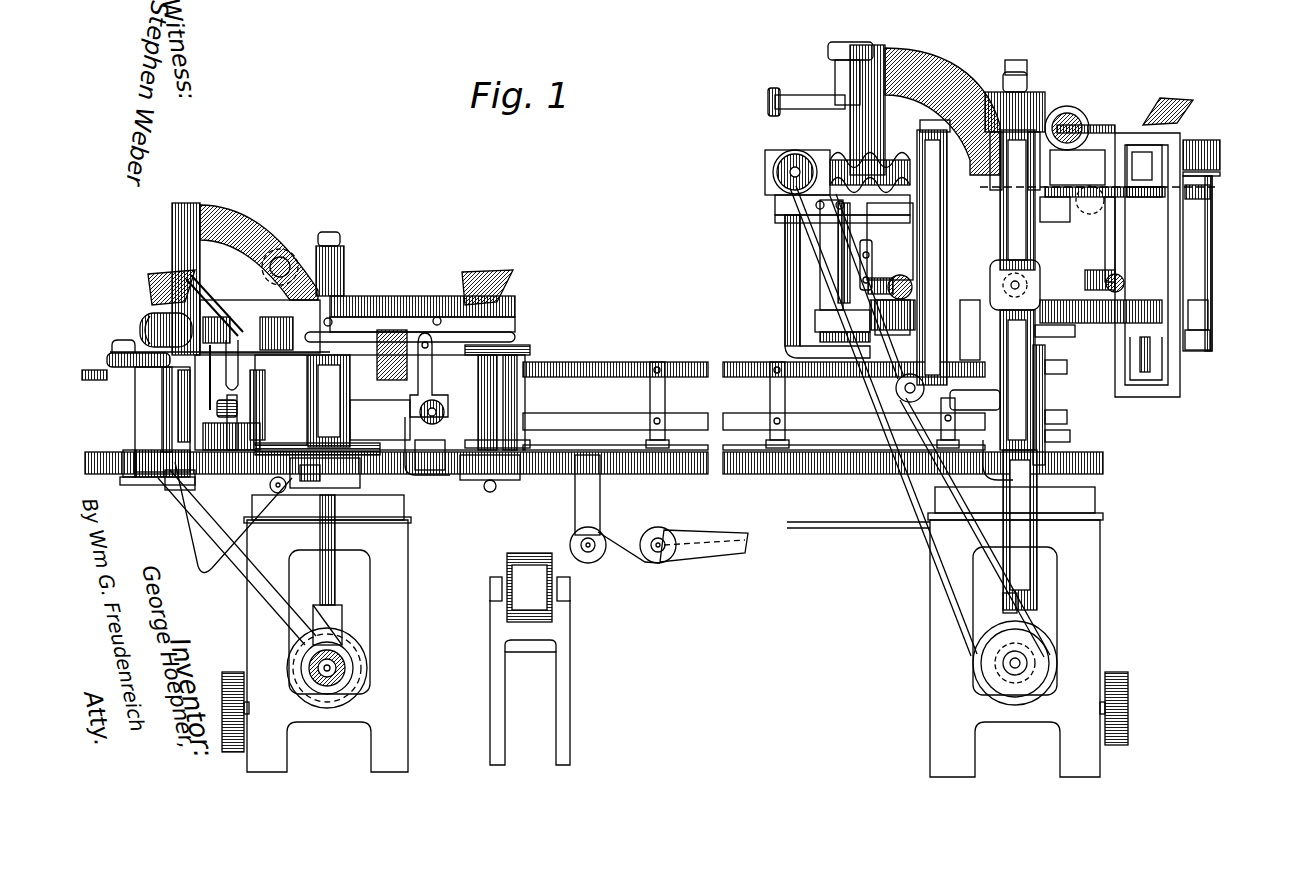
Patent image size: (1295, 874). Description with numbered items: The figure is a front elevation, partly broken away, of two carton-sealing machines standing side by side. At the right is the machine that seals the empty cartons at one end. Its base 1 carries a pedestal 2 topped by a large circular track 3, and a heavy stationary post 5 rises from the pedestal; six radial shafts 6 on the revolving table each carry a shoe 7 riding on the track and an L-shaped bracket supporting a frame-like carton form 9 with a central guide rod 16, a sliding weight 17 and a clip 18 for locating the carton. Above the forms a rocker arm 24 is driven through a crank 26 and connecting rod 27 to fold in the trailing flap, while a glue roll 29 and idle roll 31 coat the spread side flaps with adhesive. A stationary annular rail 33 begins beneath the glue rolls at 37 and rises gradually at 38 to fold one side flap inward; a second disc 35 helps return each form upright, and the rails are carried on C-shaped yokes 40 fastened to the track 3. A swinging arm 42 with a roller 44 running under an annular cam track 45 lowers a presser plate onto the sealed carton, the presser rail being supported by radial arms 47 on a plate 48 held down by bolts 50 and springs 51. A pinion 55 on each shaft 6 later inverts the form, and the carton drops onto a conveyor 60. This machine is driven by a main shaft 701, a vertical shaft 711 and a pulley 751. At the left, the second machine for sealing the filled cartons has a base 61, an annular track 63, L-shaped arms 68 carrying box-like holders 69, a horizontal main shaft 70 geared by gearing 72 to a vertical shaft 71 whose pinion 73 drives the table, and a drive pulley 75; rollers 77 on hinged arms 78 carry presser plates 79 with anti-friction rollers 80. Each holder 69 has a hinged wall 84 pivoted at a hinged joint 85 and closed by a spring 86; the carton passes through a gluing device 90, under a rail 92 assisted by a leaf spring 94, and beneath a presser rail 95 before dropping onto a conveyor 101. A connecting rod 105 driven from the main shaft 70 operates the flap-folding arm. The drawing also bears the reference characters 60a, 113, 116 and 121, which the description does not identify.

The base 1 is at (1085, 552).
The pedestal 2 is at (1067, 392).
The circular track 3 is at (1057, 338).
The cylindrical post 5 is at (1030, 88).
The radial shafts 6 is at (1000, 262).
The shoe 7 is at (1005, 275).
The frame-like part 9 is at (1208, 312).
The guide rod 16 is at (1076, 291).
The weight 17 is at (825, 328).
The clip 18 is at (899, 351).
The rocker arm 24 is at (822, 97).
The crank 26 is at (285, 252).
The connecting rod 27 is at (785, 268).
The glue roll 29 is at (835, 158).
The idle roll 31 is at (785, 203).
The annular rail 33 is at (975, 195).
The second wheel or disc 35 is at (1152, 198).
The rail beginning 37 is at (790, 222).
The rising portion of rail 38 is at (890, 195).
The C-shaped yokes 40 is at (960, 345).
The swinging arm 42 is at (890, 135).
The roller 44 is at (1087, 208).
The annular cam track 45 is at (1055, 213).
The radial arms 47 is at (1100, 124).
The plate 48 is at (1057, 115).
The bolts 50 is at (1077, 140).
The springs 51 is at (1097, 146).
The pinion 55 is at (1017, 266).
The conveyor 60 is at (700, 532).
The rail 60a is at (618, 366).
The base 61 is at (395, 605).
The annular track 63 is at (360, 405).
The L-shaped arm 68 is at (307, 465).
The carton holder 69 is at (310, 432).
The main shaft 70 is at (340, 700).
The vertical shaft 71 is at (335, 575).
The gearing 72 is at (345, 660).
The pinion 73 is at (1005, 85).
The pulley 75 is at (225, 678).
The rollers 77 is at (415, 317).
The hinged arms 78 is at (312, 281).
The presser plates 79 is at (160, 275).
The anti-friction rollers 80 is at (355, 293).
The hinged side 84 is at (118, 446).
The hinged joint 85 is at (138, 378).
The spring 86 is at (397, 389).
The gluing device 90 is at (148, 320).
The rail 92 is at (220, 395).
The leaf spring 94 is at (132, 400).
The presser rail 95 is at (380, 300).
The conveyor 101 is at (545, 545).
The connecting rod 105 is at (196, 542).
The plate 113 is at (1193, 102).
The block 116 is at (1220, 152).
The belt 121 is at (1045, 625).
The main shaft 701 is at (1030, 660).
The vertical shaft 711 is at (1070, 436).
The pulley 751 is at (1122, 690).